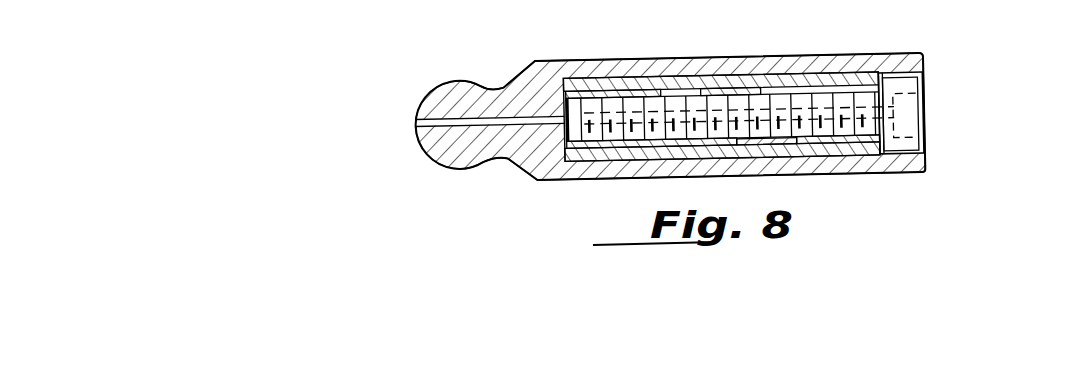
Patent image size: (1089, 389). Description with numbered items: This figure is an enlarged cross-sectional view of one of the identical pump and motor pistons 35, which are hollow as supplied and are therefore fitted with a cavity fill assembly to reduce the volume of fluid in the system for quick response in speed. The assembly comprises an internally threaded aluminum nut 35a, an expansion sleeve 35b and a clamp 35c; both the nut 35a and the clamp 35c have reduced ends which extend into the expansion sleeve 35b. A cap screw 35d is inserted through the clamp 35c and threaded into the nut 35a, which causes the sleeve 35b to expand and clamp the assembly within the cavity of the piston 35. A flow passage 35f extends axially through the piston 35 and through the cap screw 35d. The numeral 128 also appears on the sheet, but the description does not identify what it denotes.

The piston 35 is at (722, 57).
The internally threaded aluminum nut 35a is at (580, 149).
The expansion sleeve 35b is at (795, 163).
The clamp 35c is at (878, 172).
The cap screw 35d is at (925, 139).
The flow passage 35f is at (420, 122).
The reference numeral from adjacent figure 128 is at (210, 14).